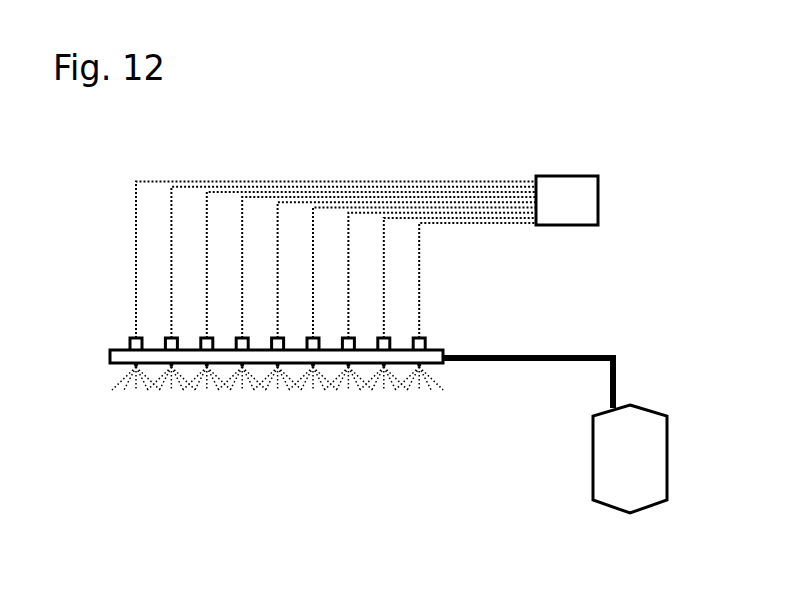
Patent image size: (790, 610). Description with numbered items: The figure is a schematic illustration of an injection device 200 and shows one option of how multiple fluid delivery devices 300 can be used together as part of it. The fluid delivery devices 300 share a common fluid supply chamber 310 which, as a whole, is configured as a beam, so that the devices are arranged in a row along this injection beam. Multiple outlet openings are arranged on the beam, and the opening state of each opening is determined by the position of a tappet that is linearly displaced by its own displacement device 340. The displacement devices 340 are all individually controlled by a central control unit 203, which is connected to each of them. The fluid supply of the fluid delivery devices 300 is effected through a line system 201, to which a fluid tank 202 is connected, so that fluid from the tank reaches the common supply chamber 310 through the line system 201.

The injection device 200 is at (373, 148).
The line system 201 is at (613, 340).
The fluid tank 202 is at (638, 440).
The central control unit 203 is at (585, 201).
The fluid delivery devices 300 is at (322, 413).
The common fluid supply chamber 310 is at (118, 357).
The displacement device 340 is at (130, 340).